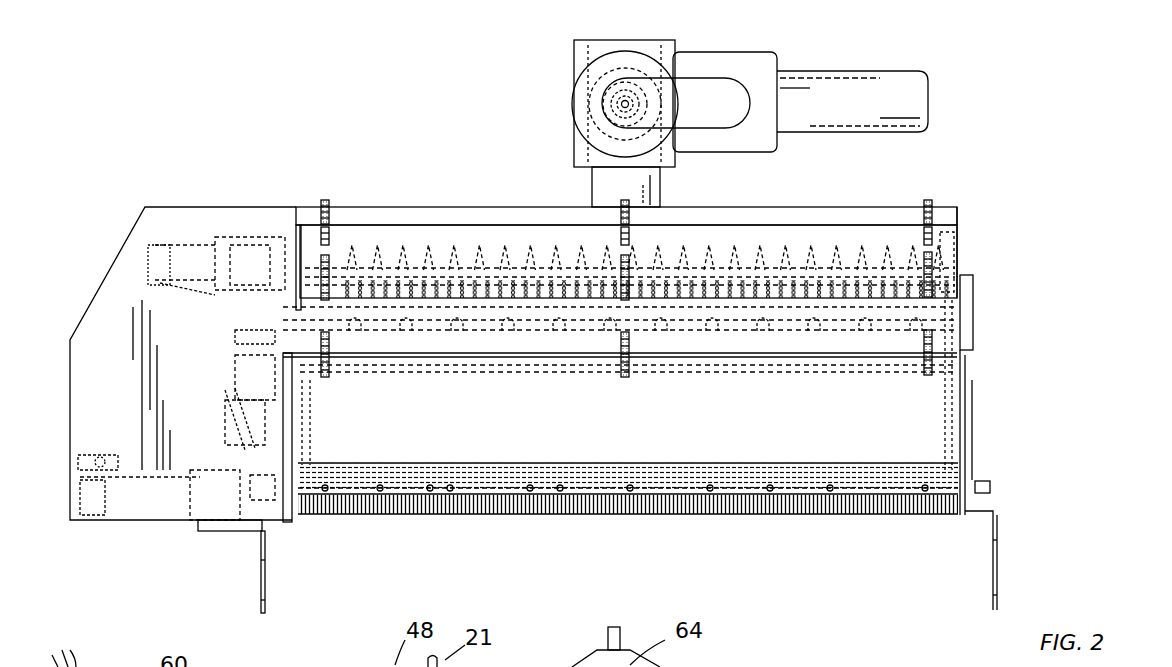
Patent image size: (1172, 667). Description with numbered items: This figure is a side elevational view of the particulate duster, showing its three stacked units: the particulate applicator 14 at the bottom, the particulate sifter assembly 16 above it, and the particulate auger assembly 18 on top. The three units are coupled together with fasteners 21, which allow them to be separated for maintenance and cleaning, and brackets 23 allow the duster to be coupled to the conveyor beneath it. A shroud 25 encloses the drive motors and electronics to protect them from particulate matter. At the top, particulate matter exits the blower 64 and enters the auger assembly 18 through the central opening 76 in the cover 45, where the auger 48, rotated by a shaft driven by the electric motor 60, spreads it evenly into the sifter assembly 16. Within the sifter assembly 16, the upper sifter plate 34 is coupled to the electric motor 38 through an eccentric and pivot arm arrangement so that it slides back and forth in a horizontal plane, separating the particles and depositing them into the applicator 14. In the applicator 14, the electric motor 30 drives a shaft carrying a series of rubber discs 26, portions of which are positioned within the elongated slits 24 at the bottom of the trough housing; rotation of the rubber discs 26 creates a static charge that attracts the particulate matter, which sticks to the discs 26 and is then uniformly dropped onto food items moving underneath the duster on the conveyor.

The particulate applicator 14 is at (925, 425).
The particulate sifter assembly 16 is at (950, 335).
The particulate auger assembly 18 is at (947, 250).
The fasteners 21 is at (330, 208).
The brackets 23 is at (265, 580).
The elongated slits 24 is at (788, 507).
The shroud 25 is at (177, 228).
The rubber discs 26 is at (738, 468).
The electric motor 30 is at (148, 498).
The upper sifter plate 34 is at (840, 322).
The electric motor 38 is at (255, 416).
The cover 45 is at (430, 215).
The auger 48 is at (752, 245).
The electric motor 60 is at (193, 260).
The blower 64 is at (722, 60).
The central opening 76 is at (660, 205).